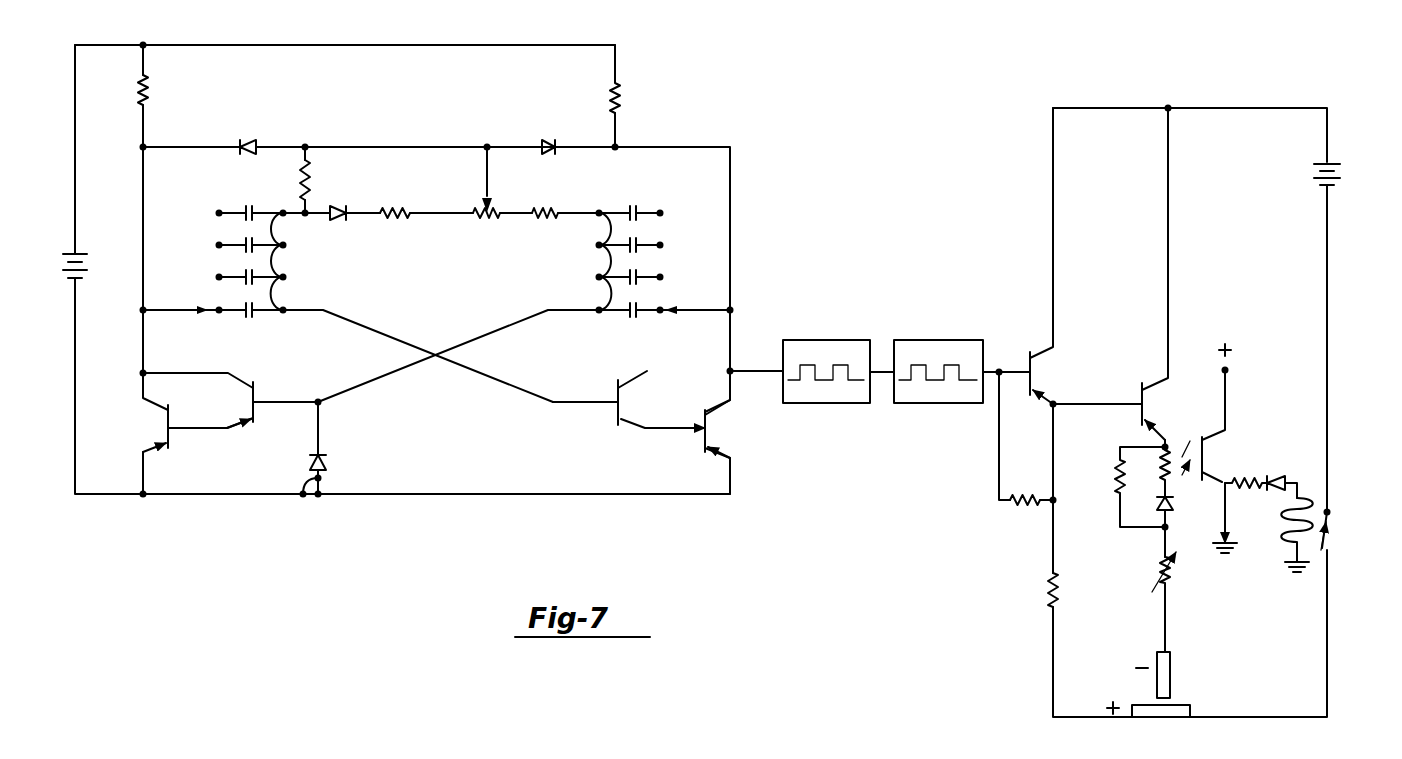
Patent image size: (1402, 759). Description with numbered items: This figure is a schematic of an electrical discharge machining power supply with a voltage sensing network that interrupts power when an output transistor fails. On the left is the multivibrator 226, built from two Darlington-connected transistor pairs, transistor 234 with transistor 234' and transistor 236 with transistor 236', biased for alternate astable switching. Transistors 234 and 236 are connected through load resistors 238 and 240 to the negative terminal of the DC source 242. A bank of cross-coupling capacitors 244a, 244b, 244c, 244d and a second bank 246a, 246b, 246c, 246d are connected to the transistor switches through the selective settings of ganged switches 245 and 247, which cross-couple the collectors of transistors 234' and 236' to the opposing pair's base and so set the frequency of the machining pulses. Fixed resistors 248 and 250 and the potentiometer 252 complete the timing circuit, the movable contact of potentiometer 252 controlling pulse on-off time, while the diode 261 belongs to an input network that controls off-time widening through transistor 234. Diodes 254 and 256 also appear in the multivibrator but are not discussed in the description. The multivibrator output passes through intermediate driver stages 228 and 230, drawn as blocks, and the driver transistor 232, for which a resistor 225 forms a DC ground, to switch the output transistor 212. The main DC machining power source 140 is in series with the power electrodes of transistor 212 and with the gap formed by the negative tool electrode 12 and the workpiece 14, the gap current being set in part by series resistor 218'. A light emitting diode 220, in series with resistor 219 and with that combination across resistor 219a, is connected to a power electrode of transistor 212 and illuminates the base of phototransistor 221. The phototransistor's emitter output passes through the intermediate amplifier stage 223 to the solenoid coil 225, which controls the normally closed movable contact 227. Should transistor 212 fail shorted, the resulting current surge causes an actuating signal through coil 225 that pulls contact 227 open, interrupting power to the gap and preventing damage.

The multivibrator stage 226 is at (416, 34).
The load resistor 238 is at (150, 94).
The load resistor 240 is at (620, 93).
The DC source 242 is at (80, 248).
The diode 254 is at (256, 144).
The diode 256 is at (550, 142).
The diode 261 is at (338, 222).
The fixed resistor 248 is at (447, 180).
The fixed resistor 250 is at (590, 181).
The potentiometer 252 is at (490, 220).
The cross-coupling capacitor 244a is at (257, 180).
The cross-coupling capacitor 244b is at (245, 242).
The cross-coupling capacitor 244c is at (245, 275).
The cross-coupling capacitor 244d is at (246, 307).
The switch 245 is at (190, 321).
The cross-coupling capacitor 246a is at (660, 181).
The cross-coupling capacitor 246b is at (640, 249).
The cross-coupling capacitor 246c is at (640, 282).
The cross-coupling capacitor 246d is at (640, 314).
The switch 247 is at (703, 321).
The transistor 234 is at (198, 443).
The transistor 234' is at (230, 420).
The transistor 236 is at (750, 429).
The transistor 236' is at (631, 398).
The intermediate driver stage 228 is at (872, 306).
The intermediate driver stage 230 is at (980, 306).
The driver transistor 232 is at (1052, 352).
The main DC machining power source 140 is at (1324, 188).
The output transistor 212 is at (1170, 378).
The resistor 219 is at (1160, 452).
The resistor 219a is at (1120, 478).
The light emitting diode 220 is at (1172, 502).
The series resistor 218' is at (1200, 602).
The phototransistor 221 is at (1214, 400).
The intermediate amplifier stage 223 is at (1268, 478).
The solenoid coil 225 is at (1060, 590).
The movable contact 227 is at (1330, 536).
The tool electrode 12 is at (1172, 668).
The workpiece 14 is at (1152, 720).